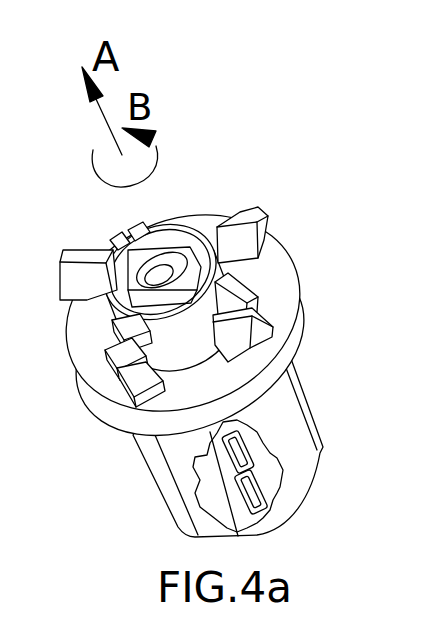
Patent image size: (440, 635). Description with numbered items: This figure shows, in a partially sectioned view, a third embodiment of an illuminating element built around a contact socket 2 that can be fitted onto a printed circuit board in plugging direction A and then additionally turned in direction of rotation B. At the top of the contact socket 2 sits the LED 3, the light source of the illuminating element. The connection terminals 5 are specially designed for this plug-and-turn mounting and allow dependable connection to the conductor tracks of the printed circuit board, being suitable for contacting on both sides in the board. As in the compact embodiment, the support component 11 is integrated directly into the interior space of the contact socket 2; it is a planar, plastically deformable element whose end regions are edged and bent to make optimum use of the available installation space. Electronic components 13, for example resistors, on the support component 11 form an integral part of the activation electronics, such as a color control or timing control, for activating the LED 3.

The contact socket 2 is at (120, 476).
The LED 3 is at (161, 276).
The connection terminals 5 is at (253, 325).
The support component 11 is at (248, 462).
The electronic components 13 is at (258, 490).